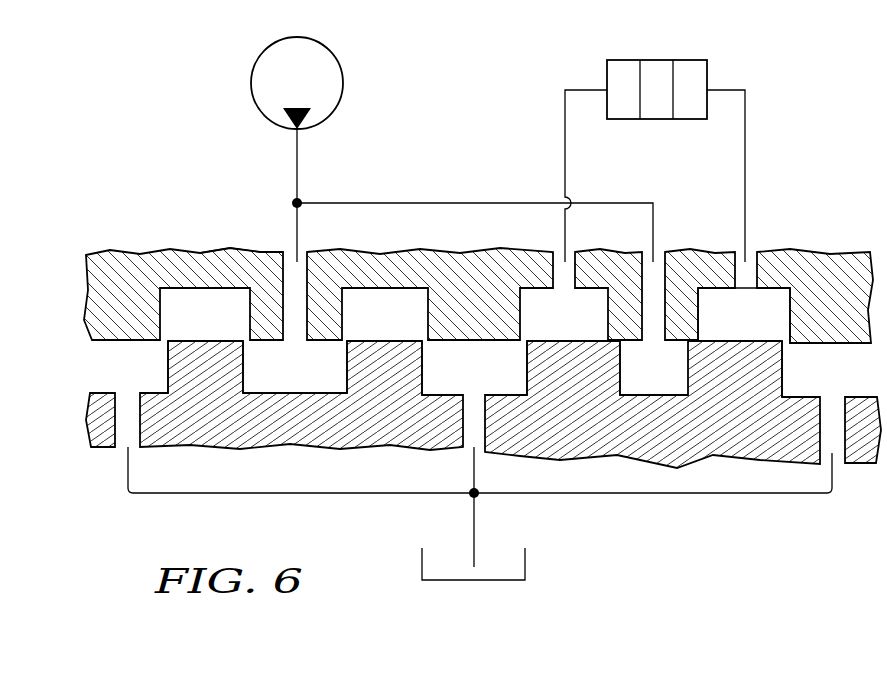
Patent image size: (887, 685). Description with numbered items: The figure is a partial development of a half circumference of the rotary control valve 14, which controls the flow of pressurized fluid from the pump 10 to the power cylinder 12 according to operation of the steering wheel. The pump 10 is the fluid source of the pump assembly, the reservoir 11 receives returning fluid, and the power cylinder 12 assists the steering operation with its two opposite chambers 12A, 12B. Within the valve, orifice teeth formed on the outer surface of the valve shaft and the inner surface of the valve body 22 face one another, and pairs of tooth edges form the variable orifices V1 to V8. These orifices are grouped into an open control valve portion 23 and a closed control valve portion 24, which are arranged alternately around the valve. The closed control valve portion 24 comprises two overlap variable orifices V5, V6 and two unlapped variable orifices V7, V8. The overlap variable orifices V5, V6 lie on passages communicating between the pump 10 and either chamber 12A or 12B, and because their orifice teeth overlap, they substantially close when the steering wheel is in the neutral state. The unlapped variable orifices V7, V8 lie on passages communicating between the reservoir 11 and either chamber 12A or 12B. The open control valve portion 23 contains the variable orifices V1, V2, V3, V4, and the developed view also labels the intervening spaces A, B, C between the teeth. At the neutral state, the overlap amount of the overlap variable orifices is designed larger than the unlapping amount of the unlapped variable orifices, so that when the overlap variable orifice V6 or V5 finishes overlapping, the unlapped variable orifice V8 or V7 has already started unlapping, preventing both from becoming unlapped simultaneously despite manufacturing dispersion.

The pump 10 is at (252, 82).
The reservoir 11 is at (493, 582).
The power cylinder 12 is at (650, 67).
The chamber 12A is at (612, 72).
The chamber 12B is at (697, 72).
The rotary control valve 14 is at (76, 274).
The valve body 22 is at (853, 275).
The open control valve portion 23 is at (230, 228).
The closed control valve portion 24 is at (708, 233).
The variable orifice V1 is at (243, 343).
The variable orifice V2 is at (347, 343).
The variable orifice V3 is at (162, 343).
The variable orifice V4 is at (422, 343).
The overlap variable orifice V5 is at (623, 345).
The overlap variable orifice V6 is at (683, 347).
The unlapped variable orifice V7 is at (525, 343).
The unlapped variable orifice V8 is at (785, 345).
The chamber A is at (205, 311).
The chamber B is at (719, 313).
The chamber C is at (765, 313).